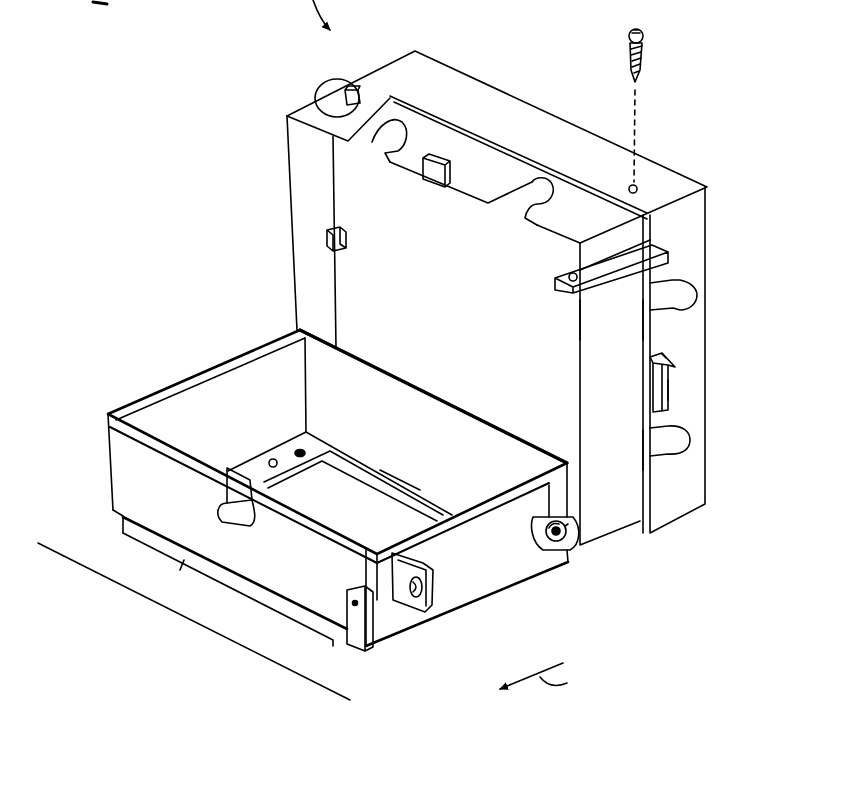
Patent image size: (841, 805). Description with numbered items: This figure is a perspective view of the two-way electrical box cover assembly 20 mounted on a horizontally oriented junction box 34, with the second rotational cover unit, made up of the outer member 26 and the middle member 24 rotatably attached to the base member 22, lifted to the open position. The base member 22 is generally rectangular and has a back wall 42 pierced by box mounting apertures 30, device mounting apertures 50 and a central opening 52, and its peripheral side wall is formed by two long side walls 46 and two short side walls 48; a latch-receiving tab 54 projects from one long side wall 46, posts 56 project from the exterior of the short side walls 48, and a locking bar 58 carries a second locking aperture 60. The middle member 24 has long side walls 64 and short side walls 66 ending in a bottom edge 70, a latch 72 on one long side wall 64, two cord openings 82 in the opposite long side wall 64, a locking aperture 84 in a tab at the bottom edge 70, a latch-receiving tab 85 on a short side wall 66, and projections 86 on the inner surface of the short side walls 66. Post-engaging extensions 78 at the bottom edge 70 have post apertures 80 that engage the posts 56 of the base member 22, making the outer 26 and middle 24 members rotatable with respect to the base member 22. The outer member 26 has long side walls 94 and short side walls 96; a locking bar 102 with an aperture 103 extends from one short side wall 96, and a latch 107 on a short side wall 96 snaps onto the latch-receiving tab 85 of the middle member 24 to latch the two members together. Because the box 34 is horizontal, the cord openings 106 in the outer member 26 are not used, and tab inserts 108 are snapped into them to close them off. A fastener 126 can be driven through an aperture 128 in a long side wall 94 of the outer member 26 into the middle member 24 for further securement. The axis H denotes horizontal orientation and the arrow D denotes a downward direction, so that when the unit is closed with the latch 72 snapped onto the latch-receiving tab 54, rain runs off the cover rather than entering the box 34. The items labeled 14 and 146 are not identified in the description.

The mounting bracket 14 is at (350, 93).
The cover assembly 20 is at (62, 176).
The base member 22 is at (490, 570).
The middle member 24 is at (475, 162).
The outer member 26 is at (483, 100).
The box mounting apertures 30 is at (310, 466).
The junction box 34 is at (133, 535).
The back wall 42 is at (310, 437).
The long side walls 46 is at (157, 480).
The short side walls 48 is at (256, 393).
The device mounting apertures 50 is at (273, 459).
The central opening 52 is at (367, 507).
The latch-receiving tab 54 is at (233, 523).
The posts 56 is at (570, 547).
The locking bar 58 is at (423, 618).
The second locking aperture 60 is at (425, 588).
The long side walls 64 is at (438, 148).
The short side walls 66 is at (322, 200).
The bottom edge 70 is at (576, 328).
The latch 72 is at (430, 173).
The post-engaging extensions 78 is at (533, 540).
The post apertures 80 is at (572, 523).
The cord openings 82 is at (380, 140).
The locking aperture 84 is at (347, 597).
The latch-receiving tab 85 is at (657, 383).
The projections 86 is at (327, 240).
The long side walls 94 is at (428, 93).
The short side walls 96 is at (688, 240).
The locking bar 102 is at (570, 273).
The aperture 103 is at (556, 282).
The cord openings 106 is at (641, 323).
The latch 107 is at (675, 382).
The tab insert 108 is at (697, 290).
The fastener 126 is at (641, 53).
The aperture 128 is at (640, 186).
The slider 146 is at (687, 397).
The H axis H is at (117, 585).
The arrow D is at (547, 682).